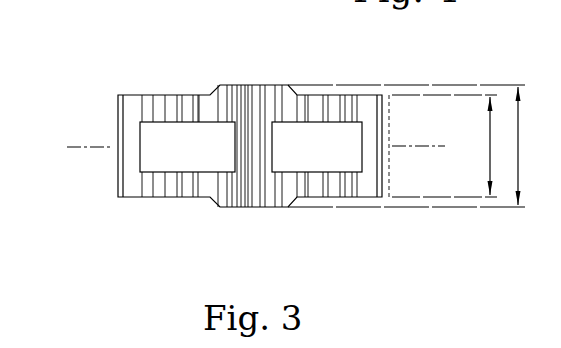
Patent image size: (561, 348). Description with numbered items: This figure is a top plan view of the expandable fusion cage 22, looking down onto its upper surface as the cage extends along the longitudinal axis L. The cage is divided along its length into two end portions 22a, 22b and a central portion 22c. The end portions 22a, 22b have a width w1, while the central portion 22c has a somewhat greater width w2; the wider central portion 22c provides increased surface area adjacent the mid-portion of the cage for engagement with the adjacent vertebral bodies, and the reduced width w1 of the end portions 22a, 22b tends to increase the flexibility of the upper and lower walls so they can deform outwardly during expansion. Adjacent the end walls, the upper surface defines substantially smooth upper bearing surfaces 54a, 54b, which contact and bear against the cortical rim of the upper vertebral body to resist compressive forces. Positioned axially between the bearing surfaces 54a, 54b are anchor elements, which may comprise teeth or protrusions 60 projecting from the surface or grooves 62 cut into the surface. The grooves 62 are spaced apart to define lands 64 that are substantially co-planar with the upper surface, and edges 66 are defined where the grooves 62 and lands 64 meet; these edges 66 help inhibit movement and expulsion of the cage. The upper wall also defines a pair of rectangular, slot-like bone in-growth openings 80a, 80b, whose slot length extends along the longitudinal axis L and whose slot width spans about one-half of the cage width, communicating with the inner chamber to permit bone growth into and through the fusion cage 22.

The fusion cage 22 is at (135, 82).
The end portion 22a is at (167, 215).
The end portion 22b is at (356, 215).
The central portion 22c is at (250, 215).
The teeth or protrusions 60 is at (246, 86).
The grooves 62 is at (203, 112).
The lands 64 is at (178, 105).
The edges 66 is at (157, 117).
The upper bearing surface 54a is at (127, 159).
The upper bearing surface 54b is at (375, 172).
The bone in-growth opening 80a is at (168, 155).
The bone in-growth opening 80b is at (296, 155).
The longitudinal axis L is at (93, 146).
The width of the end portions w1 is at (444, 146).
The width of the central portion w2 is at (537, 146).